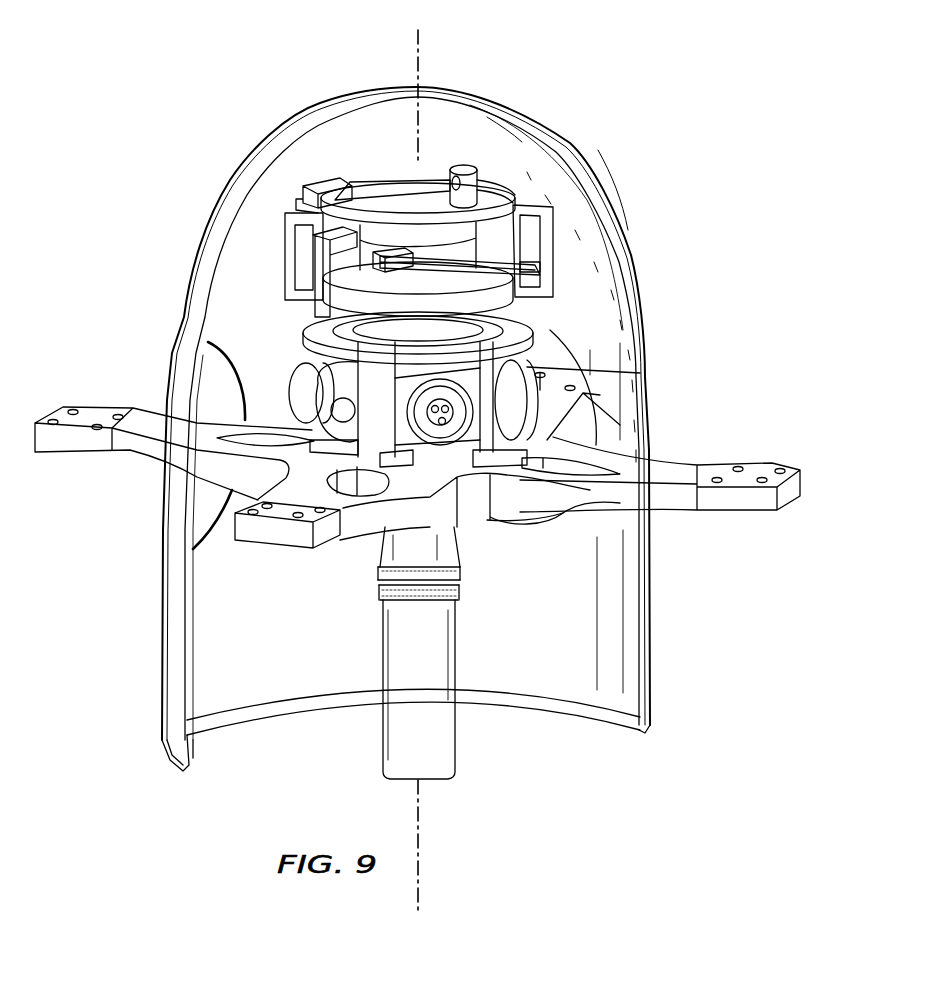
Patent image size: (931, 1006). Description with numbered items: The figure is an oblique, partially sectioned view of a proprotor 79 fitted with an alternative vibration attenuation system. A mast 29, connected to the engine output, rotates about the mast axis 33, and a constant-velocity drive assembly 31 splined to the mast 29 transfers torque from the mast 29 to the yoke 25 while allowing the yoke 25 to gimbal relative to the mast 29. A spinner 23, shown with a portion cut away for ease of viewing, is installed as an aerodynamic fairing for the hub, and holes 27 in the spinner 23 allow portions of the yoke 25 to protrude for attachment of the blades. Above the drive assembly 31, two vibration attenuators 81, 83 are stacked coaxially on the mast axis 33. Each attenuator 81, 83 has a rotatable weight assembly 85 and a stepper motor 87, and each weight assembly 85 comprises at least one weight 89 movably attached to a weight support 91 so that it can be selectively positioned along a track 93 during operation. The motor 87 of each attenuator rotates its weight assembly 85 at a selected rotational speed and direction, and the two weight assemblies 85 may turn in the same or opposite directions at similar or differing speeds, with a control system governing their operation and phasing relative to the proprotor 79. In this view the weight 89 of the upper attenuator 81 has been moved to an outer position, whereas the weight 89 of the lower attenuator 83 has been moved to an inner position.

The spinner 23 is at (161, 670).
The yoke 25 is at (683, 470).
The holes 27 is at (200, 517).
The mast 29 is at (384, 732).
The constant-velocity drive assembly 31 is at (293, 358).
The mast axis 33 is at (421, 44).
The proprotor 79 is at (554, 80).
The vibration attenuator 81 is at (524, 203).
The vibration attenuator 83 is at (512, 303).
The weight assembly 85 is at (423, 182).
The stepper motor 87 is at (505, 200).
The weight 89 is at (325, 183).
The weight support 91 is at (474, 192).
The track 93 is at (402, 187).